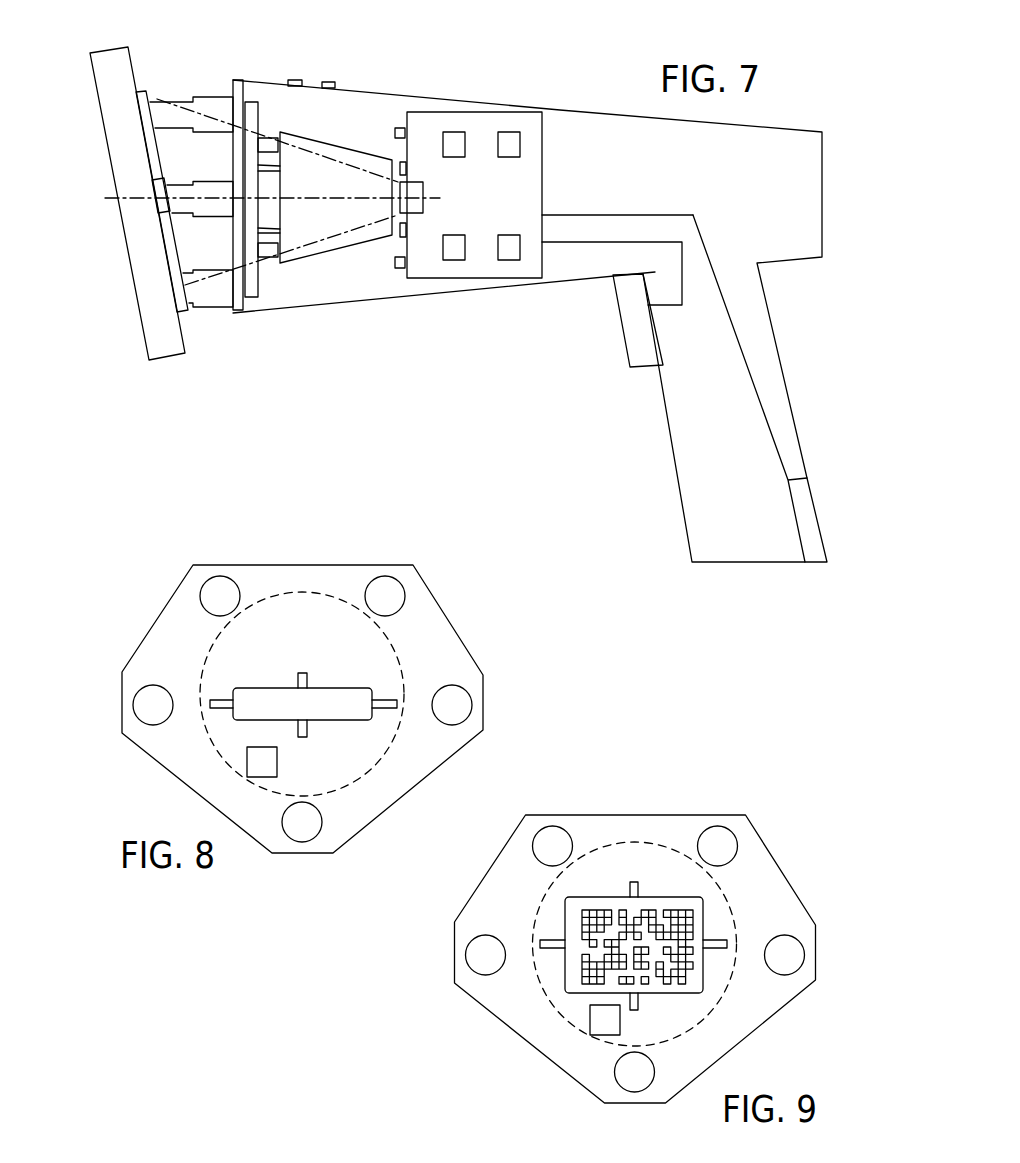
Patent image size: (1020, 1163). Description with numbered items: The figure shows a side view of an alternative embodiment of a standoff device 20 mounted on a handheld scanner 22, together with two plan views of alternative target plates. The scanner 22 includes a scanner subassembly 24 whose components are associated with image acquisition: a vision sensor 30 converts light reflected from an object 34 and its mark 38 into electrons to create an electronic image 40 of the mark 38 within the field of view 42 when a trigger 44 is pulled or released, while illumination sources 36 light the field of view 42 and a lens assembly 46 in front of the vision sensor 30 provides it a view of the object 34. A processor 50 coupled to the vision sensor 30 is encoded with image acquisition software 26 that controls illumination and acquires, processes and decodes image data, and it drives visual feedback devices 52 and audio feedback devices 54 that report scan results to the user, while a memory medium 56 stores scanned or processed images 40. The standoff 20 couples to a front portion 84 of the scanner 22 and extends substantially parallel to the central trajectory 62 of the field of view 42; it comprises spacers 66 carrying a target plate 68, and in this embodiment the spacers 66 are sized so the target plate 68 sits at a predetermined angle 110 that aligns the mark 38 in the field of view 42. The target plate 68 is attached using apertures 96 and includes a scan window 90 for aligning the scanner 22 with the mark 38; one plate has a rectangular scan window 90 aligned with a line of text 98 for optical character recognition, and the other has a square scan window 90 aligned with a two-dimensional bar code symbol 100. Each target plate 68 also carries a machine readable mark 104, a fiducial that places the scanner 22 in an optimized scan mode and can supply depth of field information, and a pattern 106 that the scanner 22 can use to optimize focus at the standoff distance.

In FIG. 7, the standoff device 20 is at (162, 77).
In FIG. 7, the handheld scanner 22 is at (788, 127).
In FIG. 7, the scanner subassembly 24 is at (543, 172).
In FIG. 7, the image acquisition software 26 is at (452, 132).
In FIG. 7, the vision sensor 30 is at (417, 216).
In FIG. 7, the object 34 is at (110, 52).
In FIG. 7, the illumination sources 36 is at (382, 132).
In FIG. 7, the mark 38 is at (152, 180).
In FIG. 7, the electronic image 40 is at (507, 132).
In FIG. 7, the field of view 42 is at (310, 258).
In FIG. 8, the field of view 42 is at (331, 598).
In FIG. 9, the field of view 42 is at (637, 842).
In FIG. 7, the trigger 44 is at (620, 323).
In FIG. 7, the lens assembly 46 is at (397, 187).
In FIG. 7, the processor 50 is at (455, 260).
In FIG. 7, the visual feedback devices 52 is at (298, 80).
In FIG. 7, the audio feedback devices 54 is at (328, 82).
In FIG. 7, the memory medium 56 is at (508, 260).
In FIG. 7, the central trajectory 62 is at (110, 198).
In FIG. 7, the spacers 66 is at (183, 102).
In FIG. 7, the target plate 68 is at (183, 313).
In FIG. 8, the target plate 68 is at (303, 563).
In FIG. 9, the target plate 68 is at (678, 815).
In FIG. 7, the front portion 84 is at (562, 281).
In FIG. 8, the scan window 90 is at (360, 712).
In FIG. 9, the scan window 90 is at (702, 923).
In FIG. 8, the apertures 96 is at (220, 577).
In FIG. 9, the apertures 96 is at (552, 825).
In FIG. 8, the text marking 98 is at (343, 693).
In FIG. 9, the two-dimensional barcode 100 is at (677, 983).
In FIG. 8, the machine readable mark 104 is at (262, 767).
In FIG. 9, the machine readable mark 104 is at (593, 1025).
In FIG. 8, the pattern 106 is at (300, 673).
In FIG. 7, the predetermined angle 110 is at (235, 270).